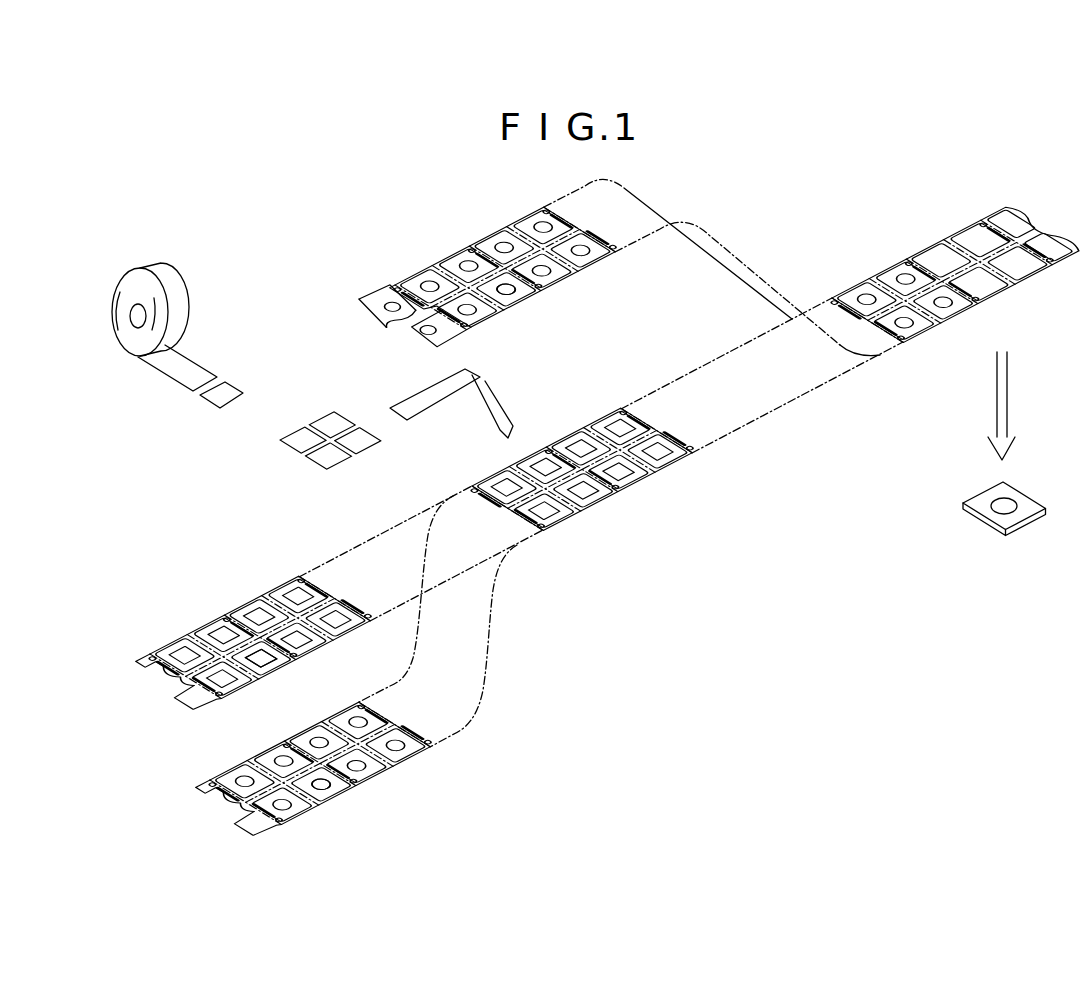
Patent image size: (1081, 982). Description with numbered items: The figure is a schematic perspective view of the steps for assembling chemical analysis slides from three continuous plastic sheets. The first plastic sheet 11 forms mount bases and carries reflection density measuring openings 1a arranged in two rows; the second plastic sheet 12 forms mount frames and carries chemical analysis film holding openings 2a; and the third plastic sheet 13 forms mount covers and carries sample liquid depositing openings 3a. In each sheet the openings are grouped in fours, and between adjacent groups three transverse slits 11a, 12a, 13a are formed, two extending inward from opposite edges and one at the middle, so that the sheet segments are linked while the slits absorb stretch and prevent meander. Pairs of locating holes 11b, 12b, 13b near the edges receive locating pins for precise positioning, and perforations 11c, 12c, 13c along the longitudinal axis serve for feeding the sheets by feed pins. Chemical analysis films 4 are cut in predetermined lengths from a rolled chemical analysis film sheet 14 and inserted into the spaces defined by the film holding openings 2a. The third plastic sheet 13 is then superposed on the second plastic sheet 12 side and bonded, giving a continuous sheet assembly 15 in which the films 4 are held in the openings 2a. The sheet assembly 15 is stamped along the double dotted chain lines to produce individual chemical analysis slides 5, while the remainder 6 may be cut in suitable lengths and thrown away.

The rolled chemical analysis film sheet 14 is at (193, 346).
The chemical analysis film 4 is at (242, 392).
The third plastic sheet 13 is at (471, 291).
The transverse slit 13a is at (377, 293).
The locating hole 13b is at (403, 258).
The perforation 13c is at (390, 316).
The sample liquid depositing opening 3a is at (512, 291).
The sheet assembly 15 is at (954, 291).
The remainder 6 is at (1045, 276).
The chemical analysis slide 5 is at (1040, 500).
The second plastic sheet 12 is at (224, 659).
The transverse slit 12a is at (130, 665).
The locating hole 12b is at (153, 657).
The perforation 12c is at (148, 693).
The chemical analysis film holding opening 2a is at (262, 668).
The first plastic sheet 11 is at (285, 786).
The transverse slit 11a is at (190, 788).
The locating hole 11b is at (218, 782).
The perforation 11c is at (225, 823).
The reflection density measuring opening 1a is at (308, 788).